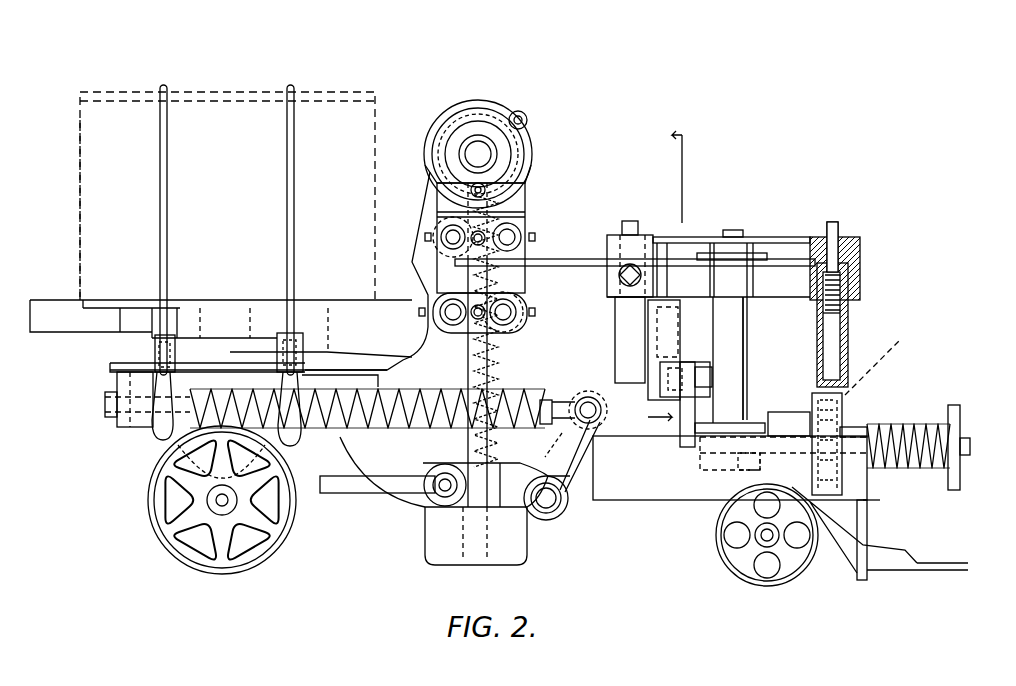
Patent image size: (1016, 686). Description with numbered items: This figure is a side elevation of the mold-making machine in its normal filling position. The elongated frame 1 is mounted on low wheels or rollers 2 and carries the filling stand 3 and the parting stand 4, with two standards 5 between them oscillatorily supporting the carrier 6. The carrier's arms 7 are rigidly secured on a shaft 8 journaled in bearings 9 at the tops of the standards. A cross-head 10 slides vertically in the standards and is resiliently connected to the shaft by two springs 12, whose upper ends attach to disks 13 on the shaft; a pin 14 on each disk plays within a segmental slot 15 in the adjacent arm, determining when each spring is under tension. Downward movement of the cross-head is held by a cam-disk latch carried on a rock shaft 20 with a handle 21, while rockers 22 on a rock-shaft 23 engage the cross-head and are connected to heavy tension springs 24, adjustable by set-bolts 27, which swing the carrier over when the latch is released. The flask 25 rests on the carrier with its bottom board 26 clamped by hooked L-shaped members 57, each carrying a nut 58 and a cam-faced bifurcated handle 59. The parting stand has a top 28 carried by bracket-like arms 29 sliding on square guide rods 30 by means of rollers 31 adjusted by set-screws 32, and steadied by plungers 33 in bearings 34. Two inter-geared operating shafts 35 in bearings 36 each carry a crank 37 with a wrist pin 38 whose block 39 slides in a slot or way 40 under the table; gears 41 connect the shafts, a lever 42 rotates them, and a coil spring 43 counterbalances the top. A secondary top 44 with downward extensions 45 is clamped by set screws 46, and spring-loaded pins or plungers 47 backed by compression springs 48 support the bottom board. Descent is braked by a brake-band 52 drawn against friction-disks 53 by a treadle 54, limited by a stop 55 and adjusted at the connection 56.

The frame 1 is at (612, 490).
The wheels or rollers 2 is at (172, 555).
The filling stand 3 is at (202, 355).
The parting stand 4 is at (748, 360).
The standards 5 is at (440, 205).
The carrier 6 is at (230, 279).
The arms 7 is at (445, 252).
The shaft 8 is at (478, 158).
The bearings 9 is at (486, 132).
The cross-head 10 is at (448, 452).
The springs 12 is at (500, 362).
The disks 13 is at (497, 110).
The pin 14 is at (452, 183).
The segmental slot 15 is at (446, 160).
The rock shaft 20 is at (445, 490).
The handle 21 is at (328, 490).
The rockers 22 is at (580, 490).
The rock-shaft 23 is at (548, 500).
The tension springs 24 is at (335, 440).
The flask 25 is at (88, 253).
The bottom board 26 is at (80, 92).
The set-bolts 27 is at (105, 412).
The top 28 is at (765, 290).
The bracket-like arms 29 is at (590, 262).
The guide rods 30 is at (468, 370).
The rollers 31 is at (525, 233).
The set-screws 32 is at (530, 310).
The plungers 33 is at (740, 380).
The bearings 34 is at (770, 412).
The operating shafts 35 is at (725, 450).
The bearings 36 is at (847, 430).
The crank 37 is at (420, 313).
The wrist pin 38 is at (707, 380).
The block 39 is at (660, 360).
The slot or way 40 is at (655, 390).
The gears 41 is at (885, 359).
The lever 42 is at (965, 445).
The coil spring 43 is at (925, 468).
The secondary top 44 is at (775, 250).
The extension 45 is at (622, 350).
The set screws 46 is at (633, 272).
The pins or plungers 47 is at (630, 221).
The compression spring 48 is at (858, 278).
The brake-band 52 is at (800, 410).
The friction-disks 53 is at (770, 460).
The treadle 54 is at (945, 565).
The stop 55 is at (855, 577).
The connection 56 is at (883, 497).
The L-shaped members 57 is at (288, 243).
The nut 58 is at (155, 352).
The bifurcated handle 59 is at (165, 437).